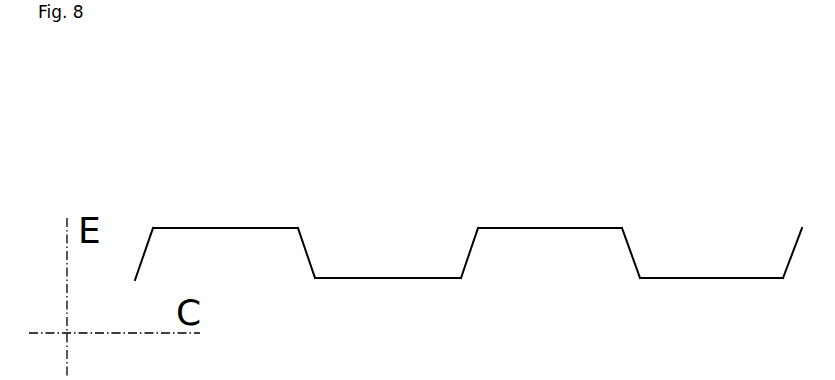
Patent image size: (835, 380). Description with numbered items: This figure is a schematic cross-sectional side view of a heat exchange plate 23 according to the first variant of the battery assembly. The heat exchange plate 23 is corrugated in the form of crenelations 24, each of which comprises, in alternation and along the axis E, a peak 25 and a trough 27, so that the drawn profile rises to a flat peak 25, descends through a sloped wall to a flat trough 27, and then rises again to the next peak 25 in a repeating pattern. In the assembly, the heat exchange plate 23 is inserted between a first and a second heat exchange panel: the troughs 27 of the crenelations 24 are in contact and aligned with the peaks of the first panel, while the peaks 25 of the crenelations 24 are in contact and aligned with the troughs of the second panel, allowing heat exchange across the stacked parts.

The heat exchange plate 23 is at (152, 146).
The crenelations 24 is at (312, 106).
The peak 25 is at (224, 227).
The trough 27 is at (385, 278).